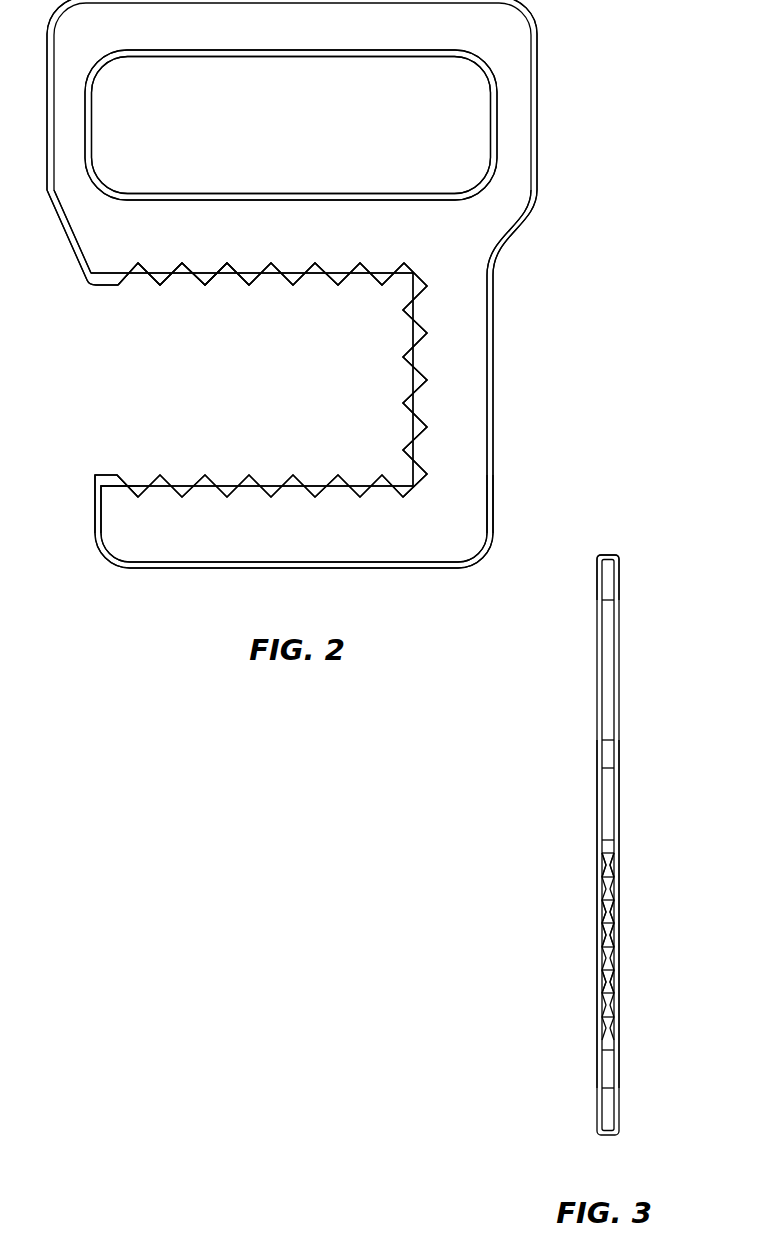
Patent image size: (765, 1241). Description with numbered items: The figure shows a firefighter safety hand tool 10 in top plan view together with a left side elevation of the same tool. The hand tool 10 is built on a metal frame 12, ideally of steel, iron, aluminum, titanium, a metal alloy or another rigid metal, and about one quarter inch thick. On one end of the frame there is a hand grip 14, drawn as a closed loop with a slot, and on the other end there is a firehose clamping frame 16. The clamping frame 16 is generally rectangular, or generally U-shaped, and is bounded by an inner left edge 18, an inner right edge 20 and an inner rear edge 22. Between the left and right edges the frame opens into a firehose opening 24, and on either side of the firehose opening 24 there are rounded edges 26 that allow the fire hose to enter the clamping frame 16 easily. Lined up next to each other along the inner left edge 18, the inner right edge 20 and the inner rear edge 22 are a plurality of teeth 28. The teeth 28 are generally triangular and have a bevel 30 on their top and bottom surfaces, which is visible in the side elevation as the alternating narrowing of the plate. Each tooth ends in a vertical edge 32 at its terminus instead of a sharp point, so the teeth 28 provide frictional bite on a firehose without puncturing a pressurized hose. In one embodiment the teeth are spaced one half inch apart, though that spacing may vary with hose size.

In FIG. 2, the firefighter safety hand tool 10 is at (520, 248).
In FIG. 2, the metal frame 12 is at (475, 277).
In FIG. 2, the hand grip 14 is at (305, 32).
In FIG. 3, the hand grip 14 is at (619, 580).
In FIG. 2, the firehose clamping frame 16 is at (306, 388).
In FIG. 2, the inner left edge 18 is at (306, 539).
In FIG. 2, the inner right edge 20 is at (227, 244).
In FIG. 2, the inner rear edge 22 is at (423, 412).
In FIG. 2, the firehose opening 24 is at (110, 420).
In FIG. 3, the firehose opening 24 is at (575, 983).
In FIG. 2, the rounded edges 26 is at (67, 234).
In FIG. 3, the rounded edges 26 is at (605, 800).
In FIG. 2, the teeth 28 is at (227, 266).
In FIG. 3, the teeth 28 is at (606, 912).
In FIG. 2, the bevel 30 is at (160, 286).
In FIG. 3, the bevel 30 is at (603, 876).
In FIG. 2, the vertical edge 32 is at (205, 286).
In FIG. 3, the vertical edge 32 is at (608, 942).